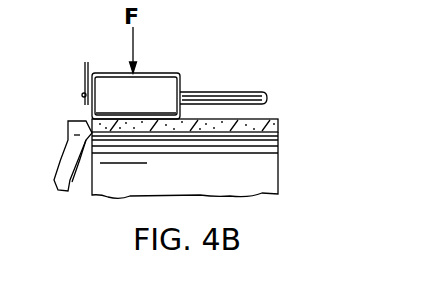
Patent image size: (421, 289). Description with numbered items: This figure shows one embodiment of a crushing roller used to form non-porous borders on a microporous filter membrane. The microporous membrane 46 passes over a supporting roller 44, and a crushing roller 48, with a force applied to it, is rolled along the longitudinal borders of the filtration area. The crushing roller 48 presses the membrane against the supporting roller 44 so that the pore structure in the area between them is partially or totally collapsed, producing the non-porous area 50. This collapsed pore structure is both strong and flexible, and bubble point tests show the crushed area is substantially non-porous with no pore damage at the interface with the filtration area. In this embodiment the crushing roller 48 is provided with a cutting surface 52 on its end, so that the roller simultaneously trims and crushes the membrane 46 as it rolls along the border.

The supporting roller 44 is at (267, 172).
The microporous membrane 46 is at (276, 120).
The crushing roller 48 is at (167, 72).
The non-porous area 50 is at (150, 116).
The cutting surface 52 is at (108, 37).